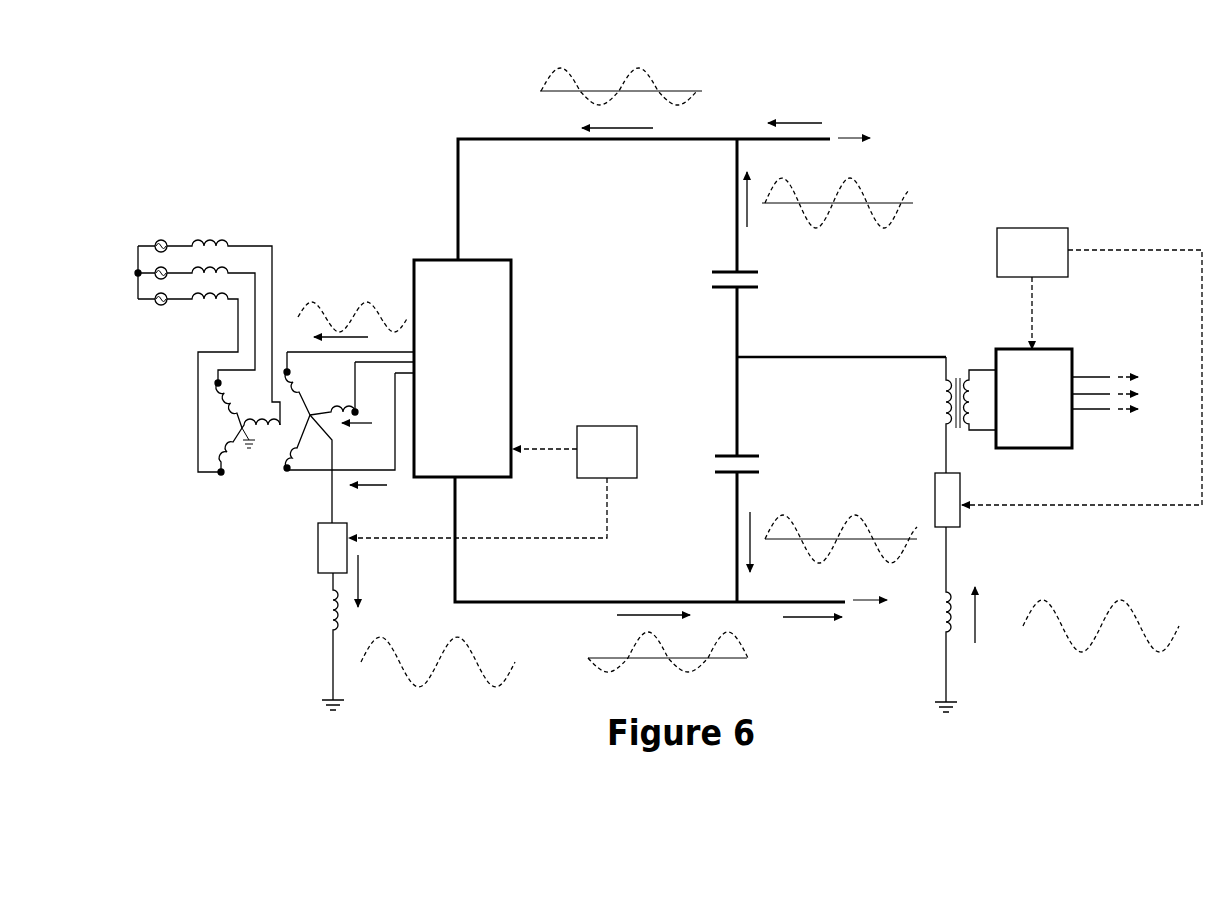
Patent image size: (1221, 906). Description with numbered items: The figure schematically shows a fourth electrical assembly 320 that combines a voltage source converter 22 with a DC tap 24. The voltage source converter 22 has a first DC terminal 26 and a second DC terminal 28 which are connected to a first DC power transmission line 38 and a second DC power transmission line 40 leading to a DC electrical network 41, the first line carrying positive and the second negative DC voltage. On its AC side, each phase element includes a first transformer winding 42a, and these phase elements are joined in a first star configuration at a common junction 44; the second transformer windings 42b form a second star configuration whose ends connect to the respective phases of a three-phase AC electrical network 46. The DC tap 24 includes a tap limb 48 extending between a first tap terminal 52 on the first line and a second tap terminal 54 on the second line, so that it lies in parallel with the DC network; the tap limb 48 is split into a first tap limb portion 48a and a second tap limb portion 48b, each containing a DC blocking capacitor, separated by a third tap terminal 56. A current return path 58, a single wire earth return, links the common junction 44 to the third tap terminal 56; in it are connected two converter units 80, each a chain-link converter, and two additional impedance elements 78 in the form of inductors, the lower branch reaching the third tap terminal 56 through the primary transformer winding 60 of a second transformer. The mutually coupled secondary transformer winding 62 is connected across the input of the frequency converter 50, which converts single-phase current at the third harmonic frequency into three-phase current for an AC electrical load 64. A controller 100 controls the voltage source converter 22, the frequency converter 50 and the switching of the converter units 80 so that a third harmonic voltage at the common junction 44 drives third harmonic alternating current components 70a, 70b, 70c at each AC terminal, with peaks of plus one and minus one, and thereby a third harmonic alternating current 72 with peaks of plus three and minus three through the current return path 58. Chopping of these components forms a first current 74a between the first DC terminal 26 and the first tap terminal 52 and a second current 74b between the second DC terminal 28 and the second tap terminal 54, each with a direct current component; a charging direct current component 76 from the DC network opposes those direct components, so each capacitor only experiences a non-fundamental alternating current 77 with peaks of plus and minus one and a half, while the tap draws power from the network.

The fourth electrical assembly 320 is at (403, 137).
The three-phase AC electrical network 46 is at (161, 235).
The first transformer winding 42a is at (295, 450).
The second transformer winding 42b is at (225, 457).
The common junction 44 is at (312, 408).
The third harmonic frequency alternating current component 70a is at (350, 343).
The third harmonic frequency alternating current component 70b is at (377, 411).
The third harmonic frequency alternating current component 70c is at (350, 446).
The voltage source converter 22 is at (497, 358).
The first DC terminal 26 is at (462, 147).
The second DC terminal 28 is at (463, 597).
The first DC power transmission line 38 is at (523, 132).
The second DC power transmission line 40 is at (537, 615).
The DC tap 24 is at (700, 347).
The first current 74a is at (650, 65).
The second current 74b is at (703, 665).
The tap limb 48 is at (735, 134).
The first tap limb portion 48a is at (740, 253).
The second tap limb portion 48b is at (747, 490).
The first tap terminal 52 is at (732, 143).
The second tap terminal 54 is at (733, 597).
The third tap terminal 56 is at (742, 355).
The charging direct current component 76 is at (805, 370).
The DC electrical network 41 is at (879, 368).
The non-fundamental frequency alternating current 77 is at (868, 192).
The primary transformer winding 60 is at (945, 350).
The secondary transformer winding 62 is at (969, 365).
The frequency converter 50 is at (1034, 398).
The AC electrical load 64 is at (1121, 393).
The controller 100 is at (775, 383).
The converter unit 80 is at (330, 547).
The additional impedance element 78 is at (328, 617).
The current return path 58 is at (320, 677).
The third harmonic frequency alternating current 72 is at (1137, 552).